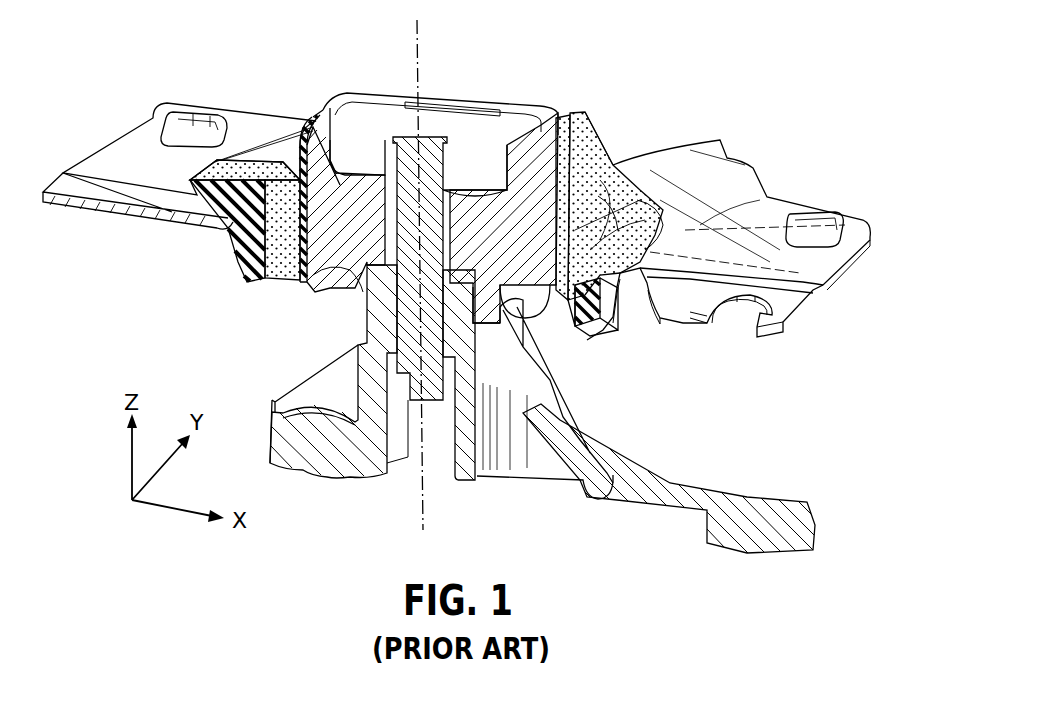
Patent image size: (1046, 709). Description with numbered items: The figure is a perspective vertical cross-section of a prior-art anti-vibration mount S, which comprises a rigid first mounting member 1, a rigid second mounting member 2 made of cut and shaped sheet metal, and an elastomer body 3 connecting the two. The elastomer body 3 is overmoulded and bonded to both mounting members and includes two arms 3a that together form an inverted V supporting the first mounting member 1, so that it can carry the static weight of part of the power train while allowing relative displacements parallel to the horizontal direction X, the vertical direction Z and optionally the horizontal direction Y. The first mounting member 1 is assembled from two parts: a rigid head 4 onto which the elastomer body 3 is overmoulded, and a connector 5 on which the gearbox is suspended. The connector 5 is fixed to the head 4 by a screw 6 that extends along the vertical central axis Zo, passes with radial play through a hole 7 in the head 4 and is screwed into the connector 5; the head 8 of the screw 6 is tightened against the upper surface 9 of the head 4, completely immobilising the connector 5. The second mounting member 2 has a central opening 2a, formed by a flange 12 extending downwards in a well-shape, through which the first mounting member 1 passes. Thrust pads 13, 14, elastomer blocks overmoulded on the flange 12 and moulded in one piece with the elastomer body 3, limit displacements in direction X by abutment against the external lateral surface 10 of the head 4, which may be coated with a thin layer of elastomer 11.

The first mounting member 1 is at (475, 148).
The second mounting member 2 is at (760, 152).
The central opening 2a is at (255, 314).
The elastomer body 3 is at (592, 172).
The arms 3a is at (598, 196).
The head 4 is at (282, 285).
The connector 5 is at (368, 468).
The screw 6 is at (410, 308).
The hole 7 is at (447, 215).
The head of the screw 8 is at (407, 155).
The upper surface 9 is at (355, 155).
The external lateral surface 10 is at (545, 190).
The thin layer of elastomer 11 is at (600, 258).
The flange 12 is at (598, 315).
The thrust pad 13 is at (580, 305).
The thrust pad 14 is at (243, 232).
The anti-vibration mount S is at (660, 68).
The vertical central axis Zo is at (418, 50).